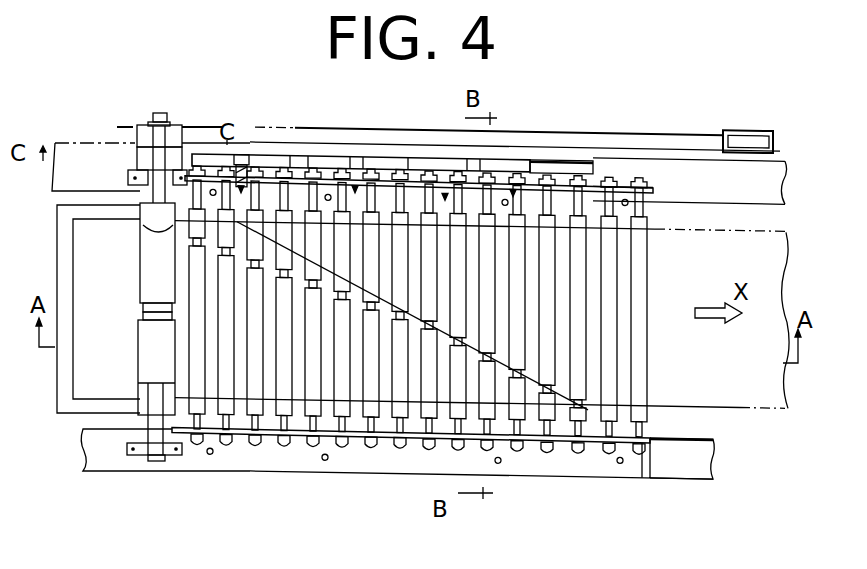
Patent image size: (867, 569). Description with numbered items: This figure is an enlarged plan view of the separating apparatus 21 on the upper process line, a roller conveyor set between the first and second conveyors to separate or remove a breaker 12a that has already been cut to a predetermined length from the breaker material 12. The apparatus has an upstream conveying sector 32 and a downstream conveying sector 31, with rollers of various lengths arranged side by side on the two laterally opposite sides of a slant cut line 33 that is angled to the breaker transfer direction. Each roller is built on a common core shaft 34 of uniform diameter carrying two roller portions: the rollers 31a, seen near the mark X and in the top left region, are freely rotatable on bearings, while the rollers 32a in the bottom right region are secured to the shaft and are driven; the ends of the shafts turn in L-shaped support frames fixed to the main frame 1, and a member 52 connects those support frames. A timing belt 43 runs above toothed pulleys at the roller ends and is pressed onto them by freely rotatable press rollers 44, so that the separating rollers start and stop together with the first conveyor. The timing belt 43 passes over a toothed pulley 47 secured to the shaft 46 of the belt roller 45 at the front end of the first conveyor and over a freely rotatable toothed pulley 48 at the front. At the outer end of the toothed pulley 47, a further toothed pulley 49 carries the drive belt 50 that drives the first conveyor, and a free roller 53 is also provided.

The main frame 1 is at (708, 178).
The breaker material 12 is at (88, 220).
The breaker cut to a predetermined length 12a is at (777, 231).
The separating apparatus 21 is at (306, 126).
The downstream conveying sector 31 is at (447, 196).
The rollers 31a is at (582, 232).
The upstream conveying sector 32 is at (382, 447).
The rollers 32a is at (247, 440).
The slant cut line 33 is at (529, 395).
The common core shaft 34 is at (511, 192).
The timing belt 43 is at (326, 158).
The press rollers 44 is at (244, 155).
The belt roller 45 is at (150, 345).
The shaft 46 is at (158, 112).
The toothed pulley 47 is at (183, 152).
The freely rotatable toothed pulley 48 is at (581, 162).
The toothed pulley 49 is at (137, 137).
The drive belt 50 is at (684, 132).
The member connecting the support frames 52 is at (291, 443).
The free roller 53 is at (644, 342).